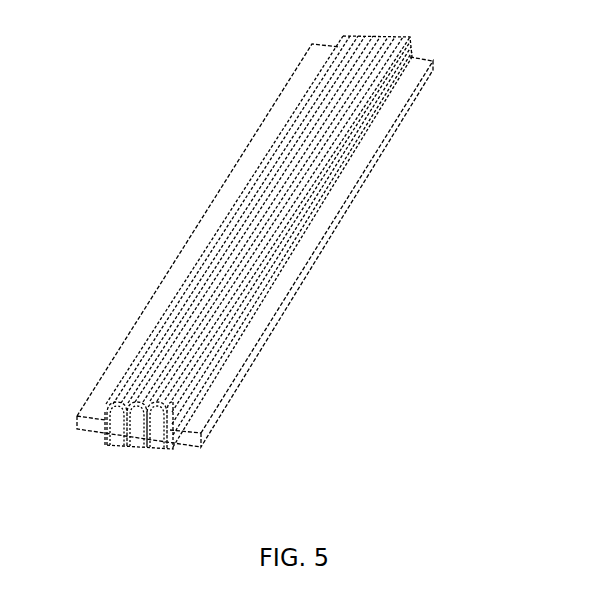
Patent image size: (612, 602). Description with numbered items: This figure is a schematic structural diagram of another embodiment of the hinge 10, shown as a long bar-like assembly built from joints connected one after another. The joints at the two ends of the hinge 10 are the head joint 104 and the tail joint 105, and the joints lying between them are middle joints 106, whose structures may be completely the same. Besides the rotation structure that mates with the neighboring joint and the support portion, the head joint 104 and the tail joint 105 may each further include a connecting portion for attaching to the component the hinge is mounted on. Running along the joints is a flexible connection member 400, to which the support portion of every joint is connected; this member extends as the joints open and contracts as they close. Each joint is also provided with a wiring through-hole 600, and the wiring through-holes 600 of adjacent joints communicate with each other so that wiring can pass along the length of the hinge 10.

The hinge 10 is at (490, 68).
The head joint 104 is at (82, 430).
The tail joint 105 is at (188, 448).
The middle joint 106 is at (109, 449).
The flexible connection member 400 is at (168, 327).
The wiring through-hole 600 is at (290, 245).